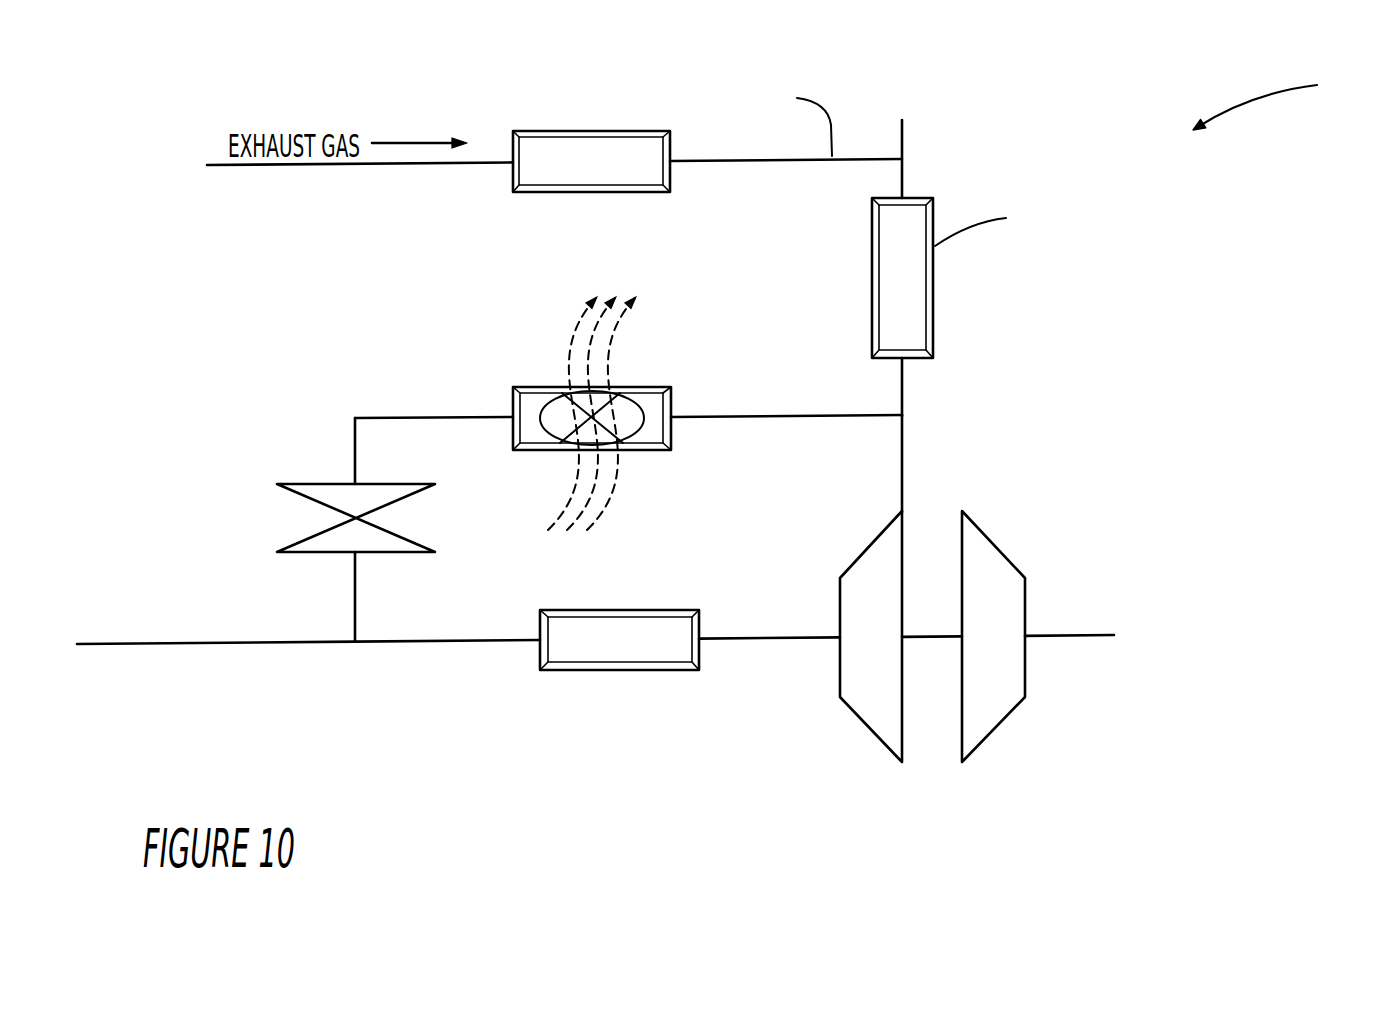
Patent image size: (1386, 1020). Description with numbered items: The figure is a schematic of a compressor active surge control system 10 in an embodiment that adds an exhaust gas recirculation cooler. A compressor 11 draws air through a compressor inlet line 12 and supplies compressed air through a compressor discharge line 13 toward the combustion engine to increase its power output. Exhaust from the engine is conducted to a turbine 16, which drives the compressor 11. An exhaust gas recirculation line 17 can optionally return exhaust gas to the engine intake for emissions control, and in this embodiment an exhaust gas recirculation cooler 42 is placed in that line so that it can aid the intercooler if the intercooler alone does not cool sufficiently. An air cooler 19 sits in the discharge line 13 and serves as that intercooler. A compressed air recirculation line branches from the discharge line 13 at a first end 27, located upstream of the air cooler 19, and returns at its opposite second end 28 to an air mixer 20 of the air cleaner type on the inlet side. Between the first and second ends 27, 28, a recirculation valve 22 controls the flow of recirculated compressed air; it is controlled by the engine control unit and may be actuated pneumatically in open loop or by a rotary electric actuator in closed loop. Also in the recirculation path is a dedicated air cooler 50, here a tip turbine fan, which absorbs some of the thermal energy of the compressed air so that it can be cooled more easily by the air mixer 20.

The compressor active surge control system 10 is at (1280, 101).
The compressor 11 is at (865, 569).
The compressor inlet line 12 is at (222, 647).
The compressor discharge line 13 is at (903, 470).
The turbine 16 is at (993, 565).
The exhaust gas recirculation line 17 is at (725, 162).
The air cooler 19 is at (905, 233).
The air mixer 20 is at (583, 657).
The recirculation valve 22 is at (380, 542).
The first end of compressed air recirculation line 27 is at (903, 413).
The second end of compressed air recirculation line 28 is at (357, 641).
The exhaust gas recirculation cooler 42 is at (568, 150).
The air cooler 50 is at (657, 437).